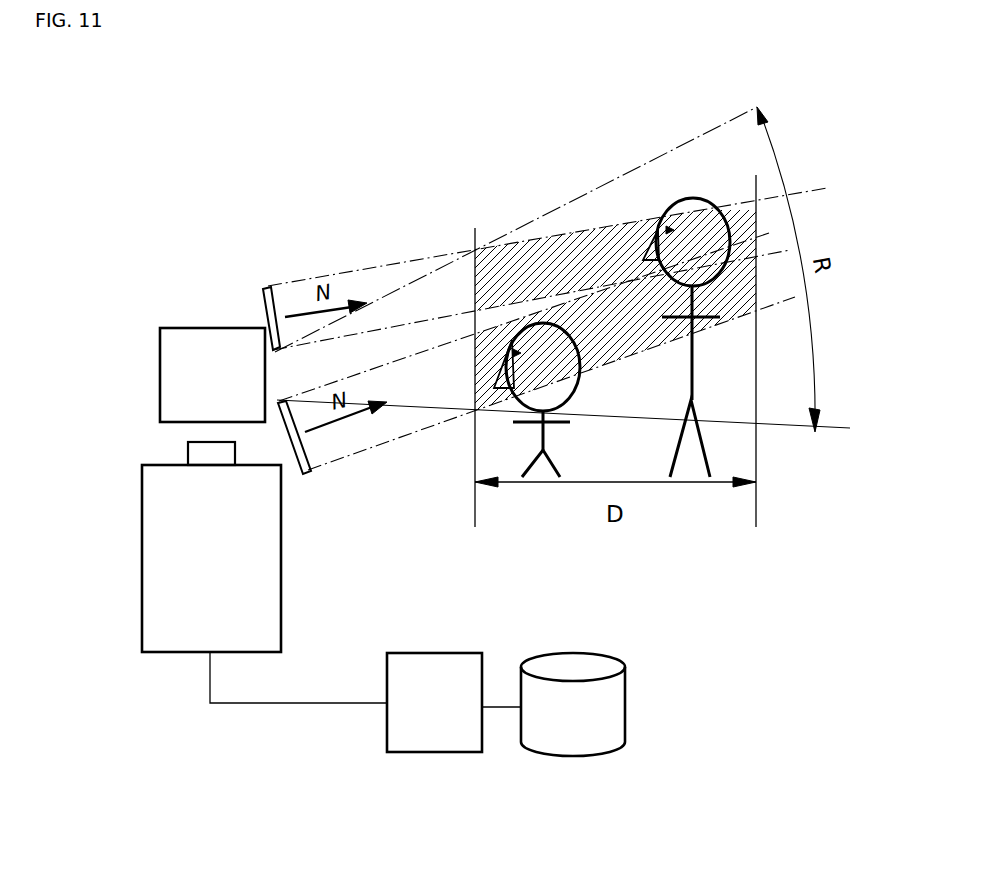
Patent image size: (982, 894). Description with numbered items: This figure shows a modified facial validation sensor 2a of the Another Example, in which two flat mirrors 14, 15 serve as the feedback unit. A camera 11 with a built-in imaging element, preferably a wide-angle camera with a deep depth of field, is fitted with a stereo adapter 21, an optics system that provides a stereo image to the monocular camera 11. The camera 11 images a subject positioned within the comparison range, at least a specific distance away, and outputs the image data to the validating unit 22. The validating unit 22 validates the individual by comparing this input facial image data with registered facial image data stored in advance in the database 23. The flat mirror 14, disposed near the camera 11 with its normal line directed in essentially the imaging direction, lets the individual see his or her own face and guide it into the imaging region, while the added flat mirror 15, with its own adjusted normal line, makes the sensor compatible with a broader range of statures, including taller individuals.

The facial validation sensor 2a is at (216, 163).
The camera 11 is at (142, 543).
The flat mirror 14 is at (309, 475).
The flat mirror 15 is at (273, 284).
The stereo adapter 21 is at (160, 373).
The validating unit 22 is at (437, 653).
The database 23 is at (573, 653).